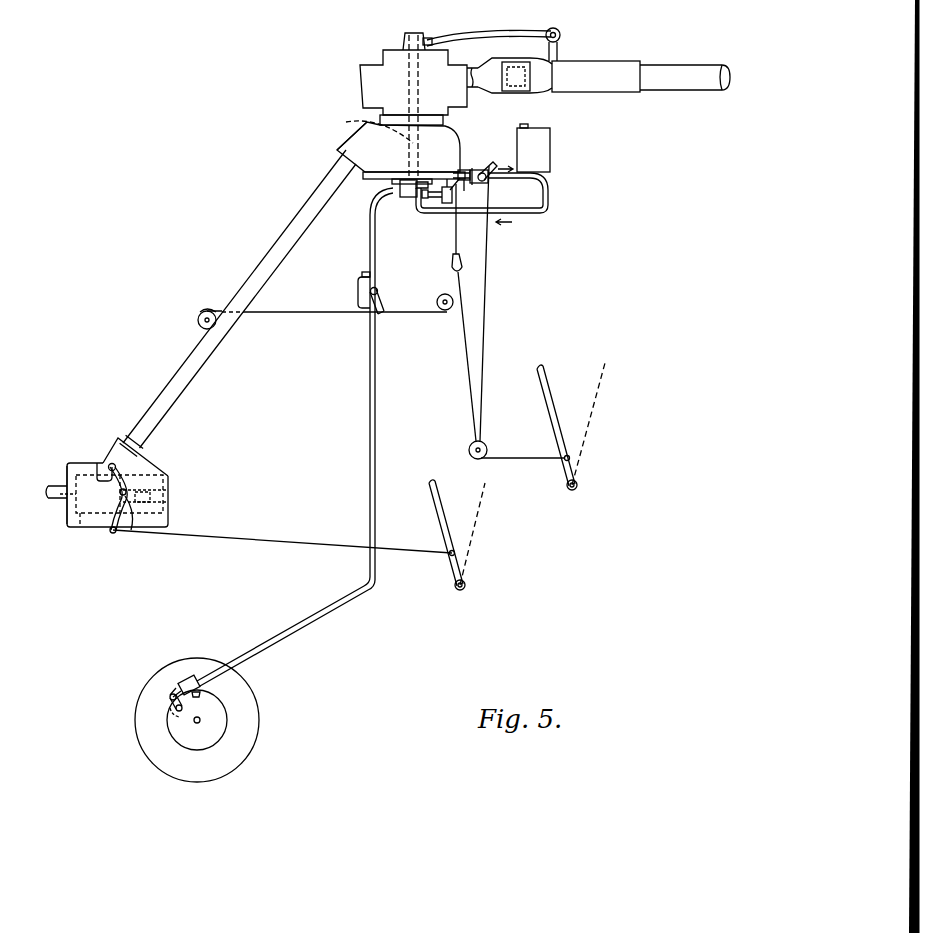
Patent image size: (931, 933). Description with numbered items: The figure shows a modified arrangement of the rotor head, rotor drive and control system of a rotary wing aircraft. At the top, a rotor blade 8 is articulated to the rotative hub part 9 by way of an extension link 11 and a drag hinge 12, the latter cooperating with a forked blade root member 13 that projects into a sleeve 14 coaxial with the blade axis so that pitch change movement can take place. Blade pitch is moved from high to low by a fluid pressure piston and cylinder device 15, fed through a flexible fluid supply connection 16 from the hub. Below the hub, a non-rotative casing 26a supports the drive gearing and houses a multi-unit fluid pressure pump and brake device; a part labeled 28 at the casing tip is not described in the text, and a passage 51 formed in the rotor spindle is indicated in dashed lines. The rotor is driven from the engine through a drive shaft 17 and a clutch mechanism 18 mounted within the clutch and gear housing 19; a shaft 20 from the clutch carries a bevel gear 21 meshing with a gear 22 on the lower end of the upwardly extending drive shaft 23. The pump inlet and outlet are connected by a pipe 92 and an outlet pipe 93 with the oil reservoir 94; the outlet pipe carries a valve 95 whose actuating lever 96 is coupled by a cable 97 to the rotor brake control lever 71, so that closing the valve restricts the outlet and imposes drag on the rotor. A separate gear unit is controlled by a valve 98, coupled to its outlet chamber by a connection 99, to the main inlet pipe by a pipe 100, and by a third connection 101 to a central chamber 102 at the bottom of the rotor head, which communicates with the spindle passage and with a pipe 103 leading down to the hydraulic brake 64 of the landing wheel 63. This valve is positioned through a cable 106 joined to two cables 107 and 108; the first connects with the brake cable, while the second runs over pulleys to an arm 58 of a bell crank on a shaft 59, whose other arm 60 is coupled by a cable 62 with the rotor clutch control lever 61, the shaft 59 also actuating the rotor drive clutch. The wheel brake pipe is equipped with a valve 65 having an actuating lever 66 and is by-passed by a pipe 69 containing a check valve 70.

The rotor blade 8 is at (680, 66).
The rotative hub part 9 is at (382, 77).
The extension link 11 is at (479, 70).
The drag hinge 12 is at (512, 92).
The forked blade root member 13 is at (547, 88).
The sleeve 14 is at (604, 64).
The fluid pressure piston and cylinder device 15 is at (560, 33).
The flexible fluid supply connection 16 is at (472, 35).
The drive shaft 17 is at (52, 486).
The clutch mechanism 18 is at (75, 529).
The clutch and gear housing 19 is at (170, 518).
The shaft 20 is at (167, 485).
The bevel gear 21 is at (170, 503).
The gear 22 is at (170, 462).
The upwardly extending drive shaft 23 is at (265, 260).
The non-rotative casing 26a is at (455, 126).
The fairing tip 28 is at (337, 150).
The passage 51 is at (370, 127).
The arm of bell crank 58 is at (101, 466).
The shaft 59 is at (127, 522).
The other arm of bell crank 60 is at (112, 522).
The rotor clutch control lever 61 is at (442, 519).
The cable 62 is at (277, 541).
The landing wheel 63 is at (258, 707).
The hydraulic brake 64 is at (187, 677).
The valve 65 is at (379, 292).
The actuating lever 66 is at (383, 306).
The by-pass pipe 69 is at (358, 287).
The check valve 70 is at (365, 272).
The rotor brake control lever 71 is at (549, 405).
The pipe 92 is at (521, 214).
The pipe 93 is at (506, 180).
The oil supply or reservoir 94 is at (541, 153).
The valve 95 is at (476, 170).
The actuating lever 96 is at (492, 161).
The cable 97 is at (487, 273).
The valve 98 is at (443, 203).
The connection 99 is at (452, 182).
The pipe 100 is at (453, 203).
The third connection 101 is at (433, 198).
The central chamber 102 is at (393, 180).
The pipe 103 is at (370, 231).
The cable 106 is at (456, 243).
The cable 107 is at (465, 335).
The cable 108 is at (388, 313).